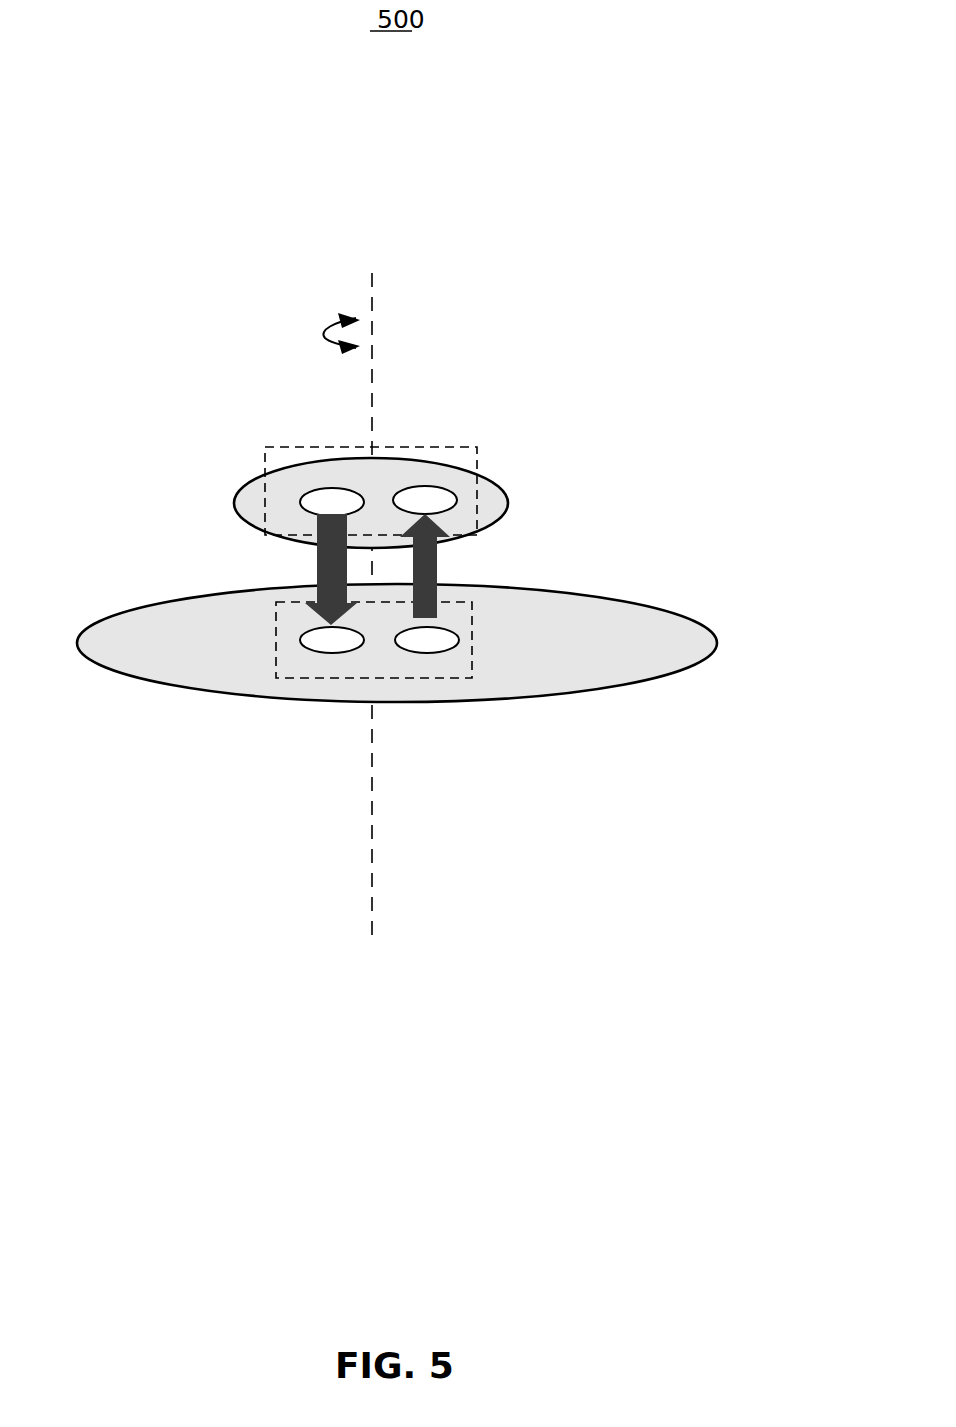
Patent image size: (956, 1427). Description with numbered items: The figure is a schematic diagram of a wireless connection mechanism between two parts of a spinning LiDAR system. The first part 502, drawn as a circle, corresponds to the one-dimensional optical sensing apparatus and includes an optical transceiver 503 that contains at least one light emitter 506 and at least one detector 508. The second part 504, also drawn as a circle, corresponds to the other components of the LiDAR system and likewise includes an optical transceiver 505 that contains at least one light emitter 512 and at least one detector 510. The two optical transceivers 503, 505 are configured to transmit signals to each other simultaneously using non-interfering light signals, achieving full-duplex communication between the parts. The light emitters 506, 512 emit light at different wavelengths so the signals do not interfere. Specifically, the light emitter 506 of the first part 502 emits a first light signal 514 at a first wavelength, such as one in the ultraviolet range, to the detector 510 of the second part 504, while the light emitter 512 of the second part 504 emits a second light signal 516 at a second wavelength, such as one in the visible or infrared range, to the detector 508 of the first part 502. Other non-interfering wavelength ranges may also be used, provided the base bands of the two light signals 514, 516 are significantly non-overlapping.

The first part 502 is at (508, 512).
The optical transceiver 503 is at (483, 455).
The second part 504 is at (682, 612).
The optical transceiver 505 is at (476, 680).
The light emitter 506 is at (289, 500).
The detector 508 is at (462, 497).
The detector 510 is at (300, 641).
The light emitter 512 is at (460, 640).
The first light signal 514 is at (310, 575).
The second light signal 516 is at (440, 567).